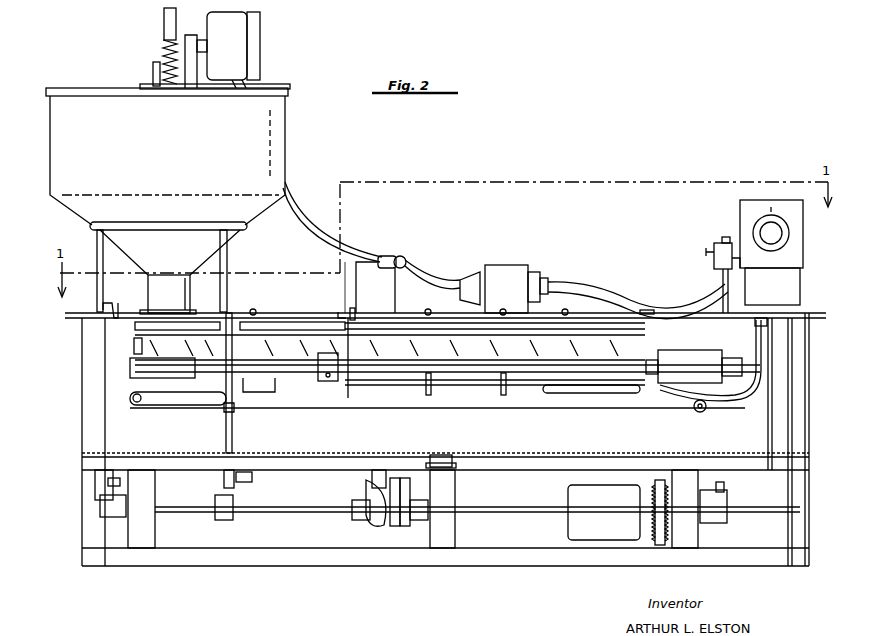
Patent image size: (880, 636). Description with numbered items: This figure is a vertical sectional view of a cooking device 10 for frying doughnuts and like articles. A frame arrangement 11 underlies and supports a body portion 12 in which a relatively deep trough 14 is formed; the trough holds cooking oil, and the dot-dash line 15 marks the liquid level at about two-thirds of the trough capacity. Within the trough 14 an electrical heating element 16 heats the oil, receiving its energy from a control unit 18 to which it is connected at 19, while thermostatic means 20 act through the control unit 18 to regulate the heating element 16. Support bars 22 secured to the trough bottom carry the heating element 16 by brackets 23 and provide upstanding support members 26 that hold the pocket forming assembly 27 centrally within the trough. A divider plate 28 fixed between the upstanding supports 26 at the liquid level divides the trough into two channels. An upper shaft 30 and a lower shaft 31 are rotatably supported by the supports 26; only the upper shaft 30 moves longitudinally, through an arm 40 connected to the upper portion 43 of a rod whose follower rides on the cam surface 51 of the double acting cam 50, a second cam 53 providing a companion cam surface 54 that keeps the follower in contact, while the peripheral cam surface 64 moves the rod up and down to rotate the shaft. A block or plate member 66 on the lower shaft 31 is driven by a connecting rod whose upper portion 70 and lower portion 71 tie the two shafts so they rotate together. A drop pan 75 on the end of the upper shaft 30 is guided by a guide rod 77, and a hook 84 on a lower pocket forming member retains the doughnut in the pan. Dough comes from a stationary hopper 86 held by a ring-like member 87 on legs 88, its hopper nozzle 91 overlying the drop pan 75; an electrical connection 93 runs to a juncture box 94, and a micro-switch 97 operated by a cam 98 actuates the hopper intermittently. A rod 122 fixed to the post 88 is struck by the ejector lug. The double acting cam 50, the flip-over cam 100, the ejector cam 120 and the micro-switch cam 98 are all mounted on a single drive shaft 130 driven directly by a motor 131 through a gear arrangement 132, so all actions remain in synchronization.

The cooking device 10 is at (134, 572).
The frame arrangement 11 is at (296, 560).
The body portion 12 is at (812, 316).
The trough 14 is at (523, 456).
The dot-dash line 15 is at (572, 284).
The heating element 16 is at (492, 406).
The control unit 18 is at (790, 278).
The connection 19 is at (770, 326).
The thermostatic means 20 is at (612, 392).
The support bars 22 is at (226, 410).
The brackets 23 is at (222, 398).
The upstanding support members 26 is at (254, 312).
The pocket forming assembly 27 is at (582, 327).
The divider plate 28 is at (462, 360).
The upper shaft 30 is at (610, 325).
The lower shaft 31 is at (532, 370).
The arm 40 is at (388, 258).
The upper portion of rod 43 is at (372, 478).
The double acting cam 50 is at (405, 527).
The cam surface 51 is at (394, 527).
The second cam 53 is at (355, 522).
The companion cam surface 54 is at (384, 525).
The peripheral cam surface 64 is at (418, 522).
The block or plate member 66 is at (318, 378).
The upper portion of connecting rod 70 is at (340, 312).
The lower portion of connecting rod 71 is at (349, 398).
The drop pan 75 is at (185, 370).
The guide rod 77 is at (130, 345).
The hook 84 is at (263, 394).
The hopper 86 is at (92, 112).
The ring-like member 87 is at (250, 226).
The legs 88 is at (228, 257).
The hopper nozzle 91 is at (180, 298).
The electrical connection 93 is at (440, 283).
The juncture box 94 is at (505, 265).
The micro-switch 97 is at (252, 480).
The cam 98 is at (228, 520).
The cam 100 is at (728, 520).
The cam 120 is at (103, 512).
The rod 122 is at (118, 308).
The drive shaft 130 is at (184, 510).
The motor 131 is at (585, 535).
The gear arrangement 132 is at (652, 545).